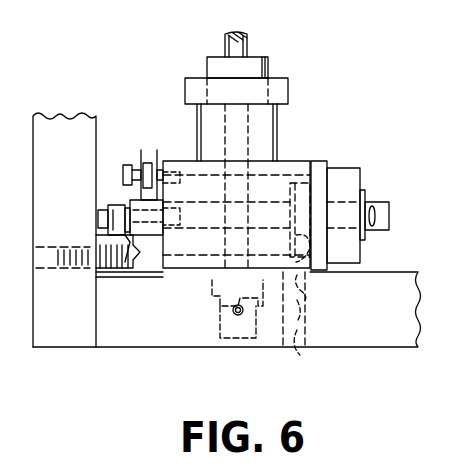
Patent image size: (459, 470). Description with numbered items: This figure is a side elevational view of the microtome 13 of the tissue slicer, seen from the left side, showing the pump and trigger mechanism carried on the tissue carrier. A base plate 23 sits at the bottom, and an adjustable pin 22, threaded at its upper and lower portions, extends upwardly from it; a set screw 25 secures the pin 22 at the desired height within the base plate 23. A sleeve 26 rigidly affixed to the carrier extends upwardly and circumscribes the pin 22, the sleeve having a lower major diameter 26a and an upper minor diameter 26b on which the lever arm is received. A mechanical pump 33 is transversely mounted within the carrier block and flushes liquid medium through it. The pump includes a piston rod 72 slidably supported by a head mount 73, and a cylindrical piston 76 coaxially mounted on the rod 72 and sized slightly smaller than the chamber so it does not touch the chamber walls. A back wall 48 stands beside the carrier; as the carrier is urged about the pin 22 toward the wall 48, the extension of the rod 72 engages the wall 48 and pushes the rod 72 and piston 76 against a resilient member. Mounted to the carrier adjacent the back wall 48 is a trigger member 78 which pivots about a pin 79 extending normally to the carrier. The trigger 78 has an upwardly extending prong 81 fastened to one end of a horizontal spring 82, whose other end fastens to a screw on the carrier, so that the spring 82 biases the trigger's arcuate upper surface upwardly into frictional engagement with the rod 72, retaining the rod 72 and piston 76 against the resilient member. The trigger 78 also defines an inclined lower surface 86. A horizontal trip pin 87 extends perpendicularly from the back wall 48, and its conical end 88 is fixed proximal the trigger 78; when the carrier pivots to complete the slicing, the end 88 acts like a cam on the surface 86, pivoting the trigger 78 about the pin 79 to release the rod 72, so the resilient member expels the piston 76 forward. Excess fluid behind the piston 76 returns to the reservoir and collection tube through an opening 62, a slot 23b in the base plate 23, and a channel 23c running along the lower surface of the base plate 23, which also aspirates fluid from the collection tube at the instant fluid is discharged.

The microtome 13 is at (320, 82).
The adjustable pin 22 is at (249, 44).
The base plate 23 is at (392, 268).
The slot 23b is at (300, 318).
The channel 23c is at (297, 340).
The set screw 25 is at (239, 316).
The sleeve 26 is at (247, 185).
The lower major diameter 26a is at (197, 117).
The upper minor diameter 26b is at (207, 64).
The mechanical pump 33 is at (398, 214).
The back wall 48 is at (60, 118).
The opening 62 is at (298, 276).
The piston rod 72 is at (378, 202).
The head mount 73 is at (360, 168).
The cylindrical piston 76 is at (306, 160).
The trigger member 78 is at (132, 202).
The pin 79 is at (115, 226).
The upwardly extending prong 81 is at (141, 162).
The horizontal spring 82 is at (151, 158).
The inclined lower surface 86 is at (134, 240).
The horizontal trip pin 87 is at (106, 270).
The conical end 88 is at (131, 270).